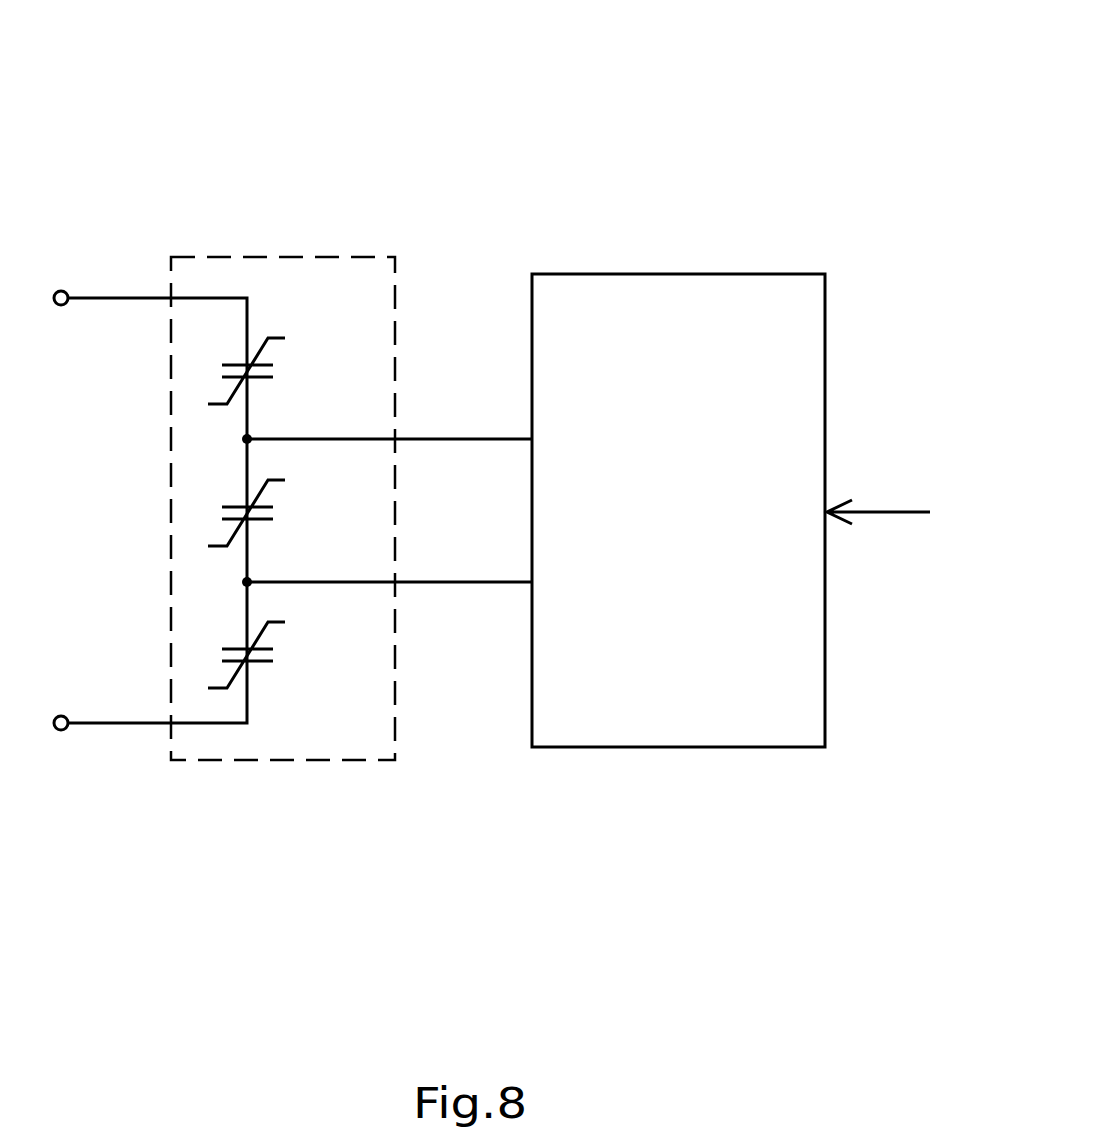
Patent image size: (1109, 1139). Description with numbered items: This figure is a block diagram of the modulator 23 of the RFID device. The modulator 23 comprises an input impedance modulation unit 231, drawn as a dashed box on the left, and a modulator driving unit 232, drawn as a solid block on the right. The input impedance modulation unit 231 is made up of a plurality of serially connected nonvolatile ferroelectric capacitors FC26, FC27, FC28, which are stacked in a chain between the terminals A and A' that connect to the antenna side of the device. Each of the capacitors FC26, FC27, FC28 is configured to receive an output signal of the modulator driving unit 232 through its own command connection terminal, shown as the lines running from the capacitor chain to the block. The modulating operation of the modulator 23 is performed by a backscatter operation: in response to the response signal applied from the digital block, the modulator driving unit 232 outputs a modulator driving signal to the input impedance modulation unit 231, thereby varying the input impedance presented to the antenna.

The modulator 23 is at (677, 107).
The input impedance modulation unit 231 is at (395, 257).
The modulator driving unit 232 is at (825, 274).
The nonvolatile ferroelectric capacitor FC26 is at (287, 371).
The nonvolatile ferroelectric capacitor FC27 is at (287, 513).
The nonvolatile ferroelectric capacitor FC28 is at (287, 655).